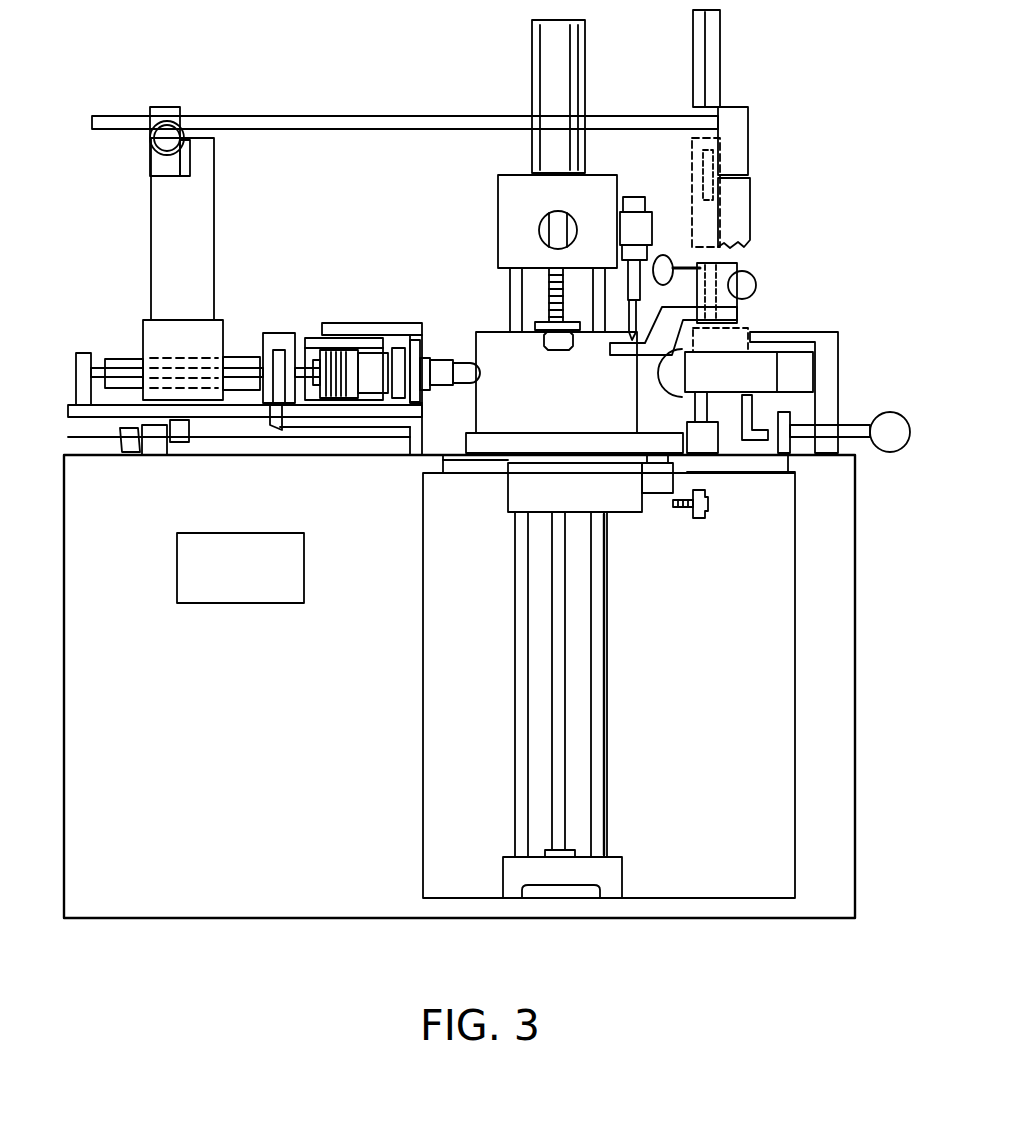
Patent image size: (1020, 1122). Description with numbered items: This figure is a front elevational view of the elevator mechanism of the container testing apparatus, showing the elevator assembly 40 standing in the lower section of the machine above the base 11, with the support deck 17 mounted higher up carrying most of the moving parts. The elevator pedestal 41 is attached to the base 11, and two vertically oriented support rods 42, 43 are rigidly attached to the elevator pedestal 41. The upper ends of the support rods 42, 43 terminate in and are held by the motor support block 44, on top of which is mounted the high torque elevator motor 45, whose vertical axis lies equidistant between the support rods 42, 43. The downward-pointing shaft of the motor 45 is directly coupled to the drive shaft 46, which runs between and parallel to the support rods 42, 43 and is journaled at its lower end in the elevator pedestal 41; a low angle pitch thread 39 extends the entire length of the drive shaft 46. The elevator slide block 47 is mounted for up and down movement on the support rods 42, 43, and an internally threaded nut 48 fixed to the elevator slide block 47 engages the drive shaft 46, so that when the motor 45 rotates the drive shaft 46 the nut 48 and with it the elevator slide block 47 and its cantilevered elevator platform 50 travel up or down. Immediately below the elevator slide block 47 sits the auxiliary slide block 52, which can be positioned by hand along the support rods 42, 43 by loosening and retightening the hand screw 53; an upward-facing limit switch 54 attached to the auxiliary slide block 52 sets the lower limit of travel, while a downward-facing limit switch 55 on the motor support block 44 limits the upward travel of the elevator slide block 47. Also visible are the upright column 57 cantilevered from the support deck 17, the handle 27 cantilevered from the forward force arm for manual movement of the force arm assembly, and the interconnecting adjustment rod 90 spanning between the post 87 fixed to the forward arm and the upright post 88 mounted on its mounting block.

The base 11 is at (673, 898).
The support deck 17 is at (436, 455).
The handle 27 is at (886, 453).
The low angle pitch thread 39 is at (548, 297).
The elevator assembly 40 is at (607, 595).
The elevator pedestal 41 is at (623, 863).
The support rod 42 is at (513, 770).
The support rod 43 is at (608, 748).
The motor support block 44 is at (497, 203).
The high torque elevator motor 45 is at (587, 60).
The drive shaft 46 is at (567, 673).
The elevator slide block 47 is at (477, 332).
The internally threaded nut 48 is at (565, 351).
The elevator platform 50 is at (497, 448).
The auxiliary slide block 52 is at (623, 512).
The hand screw 53 is at (700, 519).
The limit switch 54 is at (676, 481).
The limit switch 55 is at (650, 225).
The upright column 57 is at (724, 70).
The post 87 is at (752, 203).
The upright post 88 is at (215, 253).
The interconnecting adjustment rod 90 is at (400, 116).